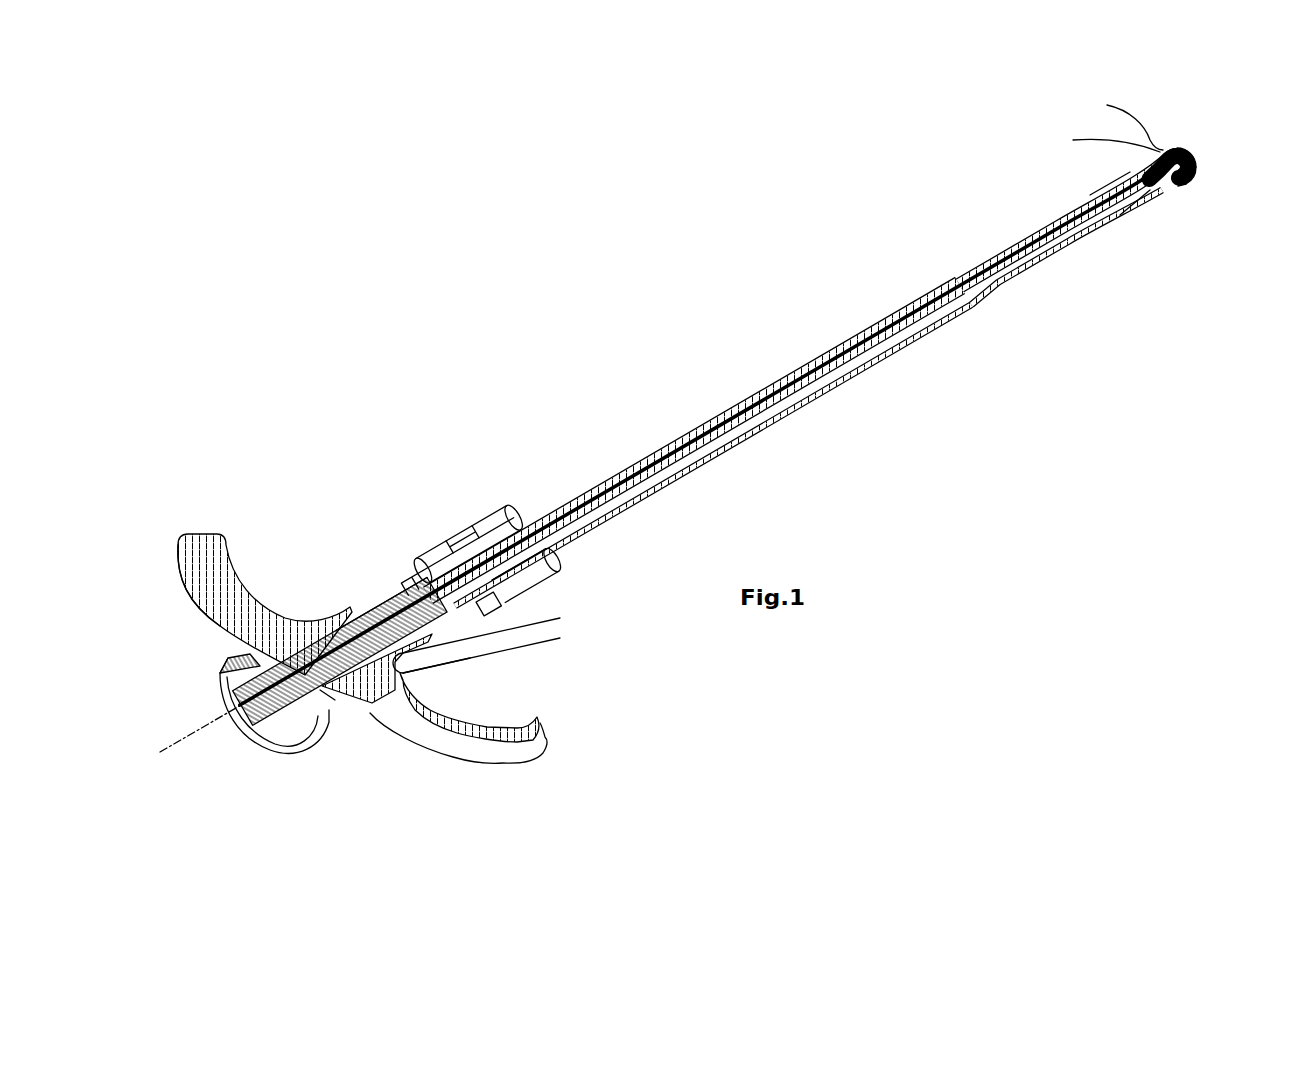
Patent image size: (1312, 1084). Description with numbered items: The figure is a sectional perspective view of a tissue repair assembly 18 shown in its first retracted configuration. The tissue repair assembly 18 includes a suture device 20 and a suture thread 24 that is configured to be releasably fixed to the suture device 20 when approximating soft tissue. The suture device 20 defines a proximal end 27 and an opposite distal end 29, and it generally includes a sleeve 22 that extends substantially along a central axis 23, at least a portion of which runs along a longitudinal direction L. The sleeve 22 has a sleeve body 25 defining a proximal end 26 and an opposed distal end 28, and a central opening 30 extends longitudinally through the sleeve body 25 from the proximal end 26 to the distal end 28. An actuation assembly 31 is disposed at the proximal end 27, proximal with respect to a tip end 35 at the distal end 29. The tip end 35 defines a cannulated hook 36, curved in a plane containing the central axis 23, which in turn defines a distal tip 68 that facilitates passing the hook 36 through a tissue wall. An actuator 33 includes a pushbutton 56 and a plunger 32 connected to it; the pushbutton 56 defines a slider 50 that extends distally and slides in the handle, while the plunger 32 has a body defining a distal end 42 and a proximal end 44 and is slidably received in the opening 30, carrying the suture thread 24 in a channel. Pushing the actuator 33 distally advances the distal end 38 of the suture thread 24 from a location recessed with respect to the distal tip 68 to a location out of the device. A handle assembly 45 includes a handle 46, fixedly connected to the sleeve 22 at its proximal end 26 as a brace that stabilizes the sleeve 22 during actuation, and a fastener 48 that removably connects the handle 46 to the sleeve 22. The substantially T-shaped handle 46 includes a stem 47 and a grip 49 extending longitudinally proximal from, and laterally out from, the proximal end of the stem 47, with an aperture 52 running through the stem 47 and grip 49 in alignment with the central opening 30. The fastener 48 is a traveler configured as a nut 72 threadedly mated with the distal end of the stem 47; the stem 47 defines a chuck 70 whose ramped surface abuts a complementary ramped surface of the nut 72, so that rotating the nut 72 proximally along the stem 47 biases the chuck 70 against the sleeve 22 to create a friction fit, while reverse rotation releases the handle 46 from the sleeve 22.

The tissue repair assembly 18 is at (355, 445).
The suture device 20 is at (280, 752).
The sleeve 22 is at (632, 462).
The central axis 23 is at (215, 715).
The suture thread 24 is at (1136, 108).
The sleeve body 25 is at (712, 410).
The proximal end 26 is at (462, 535).
The proximal end 27 is at (178, 562).
The distal end 28 is at (1150, 190).
The distal end 29 is at (1207, 180).
The central opening 30 is at (762, 420).
The actuation assembly 31 is at (372, 580).
The plunger 32 is at (420, 575).
The actuator 33 is at (211, 687).
The tip end 35 is at (1205, 158).
The cannulated hook 36 is at (1192, 186).
The distal end 38 is at (1147, 133).
The distal end 42 is at (1130, 172).
The proximal end 44 is at (408, 670).
The handle assembly 45 is at (537, 762).
The handle 46 is at (345, 600).
The stem 47 is at (470, 636).
The fastener 48 is at (496, 513).
The grip 49 is at (207, 535).
The slider 50 is at (325, 683).
The aperture 52 is at (490, 605).
The pushbutton 56 is at (225, 665).
The distal tip 68 is at (1163, 157).
The chuck 70 is at (540, 573).
The nut 72 is at (545, 553).
The longitudinal direction L is at (186, 740).